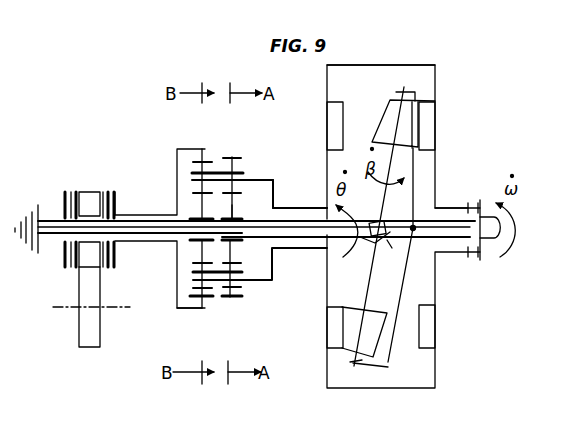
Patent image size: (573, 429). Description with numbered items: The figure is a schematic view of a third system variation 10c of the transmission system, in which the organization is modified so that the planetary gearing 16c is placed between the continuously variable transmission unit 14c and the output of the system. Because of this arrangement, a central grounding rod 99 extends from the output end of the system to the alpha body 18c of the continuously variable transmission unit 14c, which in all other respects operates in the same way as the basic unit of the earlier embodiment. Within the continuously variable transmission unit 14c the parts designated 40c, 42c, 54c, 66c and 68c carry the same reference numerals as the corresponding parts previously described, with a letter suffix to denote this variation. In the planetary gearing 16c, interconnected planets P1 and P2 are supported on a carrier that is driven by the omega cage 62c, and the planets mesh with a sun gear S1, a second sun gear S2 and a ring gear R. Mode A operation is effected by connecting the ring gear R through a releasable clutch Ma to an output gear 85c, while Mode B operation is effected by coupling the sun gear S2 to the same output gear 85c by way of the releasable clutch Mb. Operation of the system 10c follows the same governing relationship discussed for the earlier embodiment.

The third system variation 10c is at (152, 132).
The continuously variable transmission unit 14c is at (449, 131).
The planetary gearing 16c is at (242, 139).
The alpha body 18c is at (401, 276).
The nutating member 40c is at (382, 113).
The nutating member 42c is at (375, 345).
The bearing 54c is at (332, 332).
The omega cage 62c is at (436, 93).
The housing wall 66c is at (448, 207).
The housing portion 68c is at (300, 207).
The output gear 85c is at (92, 192).
The central grounding rod 99 is at (50, 235).
The releasable clutch Ma is at (109, 267).
The releasable clutch Mb is at (70, 268).
The planet P1 is at (238, 165).
The planet P2 is at (203, 162).
The sun gear S1 is at (235, 213).
The sun gear S2 is at (202, 250).
The ring gear R is at (205, 308).